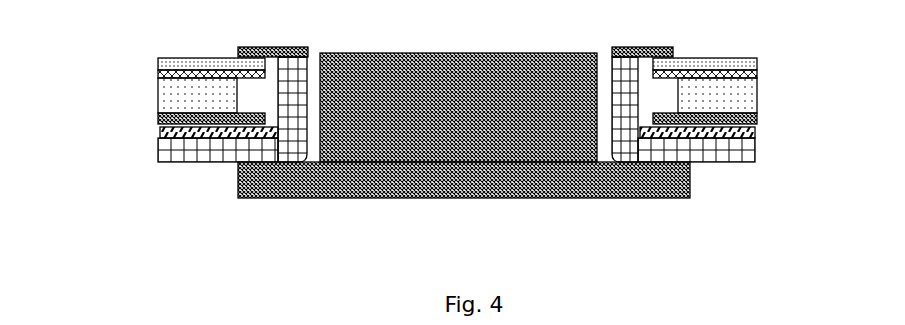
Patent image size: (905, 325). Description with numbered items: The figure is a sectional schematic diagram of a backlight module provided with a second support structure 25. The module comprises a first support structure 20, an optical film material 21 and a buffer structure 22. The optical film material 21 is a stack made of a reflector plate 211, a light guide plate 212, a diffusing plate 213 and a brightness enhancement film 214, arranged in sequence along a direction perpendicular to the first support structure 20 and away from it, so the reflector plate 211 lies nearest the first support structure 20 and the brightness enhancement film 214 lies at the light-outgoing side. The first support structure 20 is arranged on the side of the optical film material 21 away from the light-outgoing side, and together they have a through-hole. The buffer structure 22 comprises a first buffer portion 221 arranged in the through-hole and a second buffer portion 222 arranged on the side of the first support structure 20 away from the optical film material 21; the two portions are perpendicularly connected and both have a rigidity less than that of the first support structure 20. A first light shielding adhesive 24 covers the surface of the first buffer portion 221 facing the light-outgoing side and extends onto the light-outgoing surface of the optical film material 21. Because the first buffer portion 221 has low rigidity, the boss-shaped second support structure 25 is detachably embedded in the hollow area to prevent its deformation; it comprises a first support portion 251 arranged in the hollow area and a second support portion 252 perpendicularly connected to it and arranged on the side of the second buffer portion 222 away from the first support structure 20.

The first support structure 20 is at (160, 131).
The optical film material 21 is at (467, 83).
The reflector plate 211 is at (464, 119).
The light guide plate 212 is at (175, 92).
The diffusing plate 213 is at (160, 72).
The brightness enhancement film 214 is at (172, 60).
The buffer structure 22 is at (456, 156).
The first buffer portion 221 is at (290, 113).
The second buffer portion 222 is at (215, 150).
The first light shielding adhesive 24 is at (275, 47).
The second support structure 25 is at (464, 158).
The first support portion 251 is at (452, 108).
The second support portion 252 is at (305, 180).